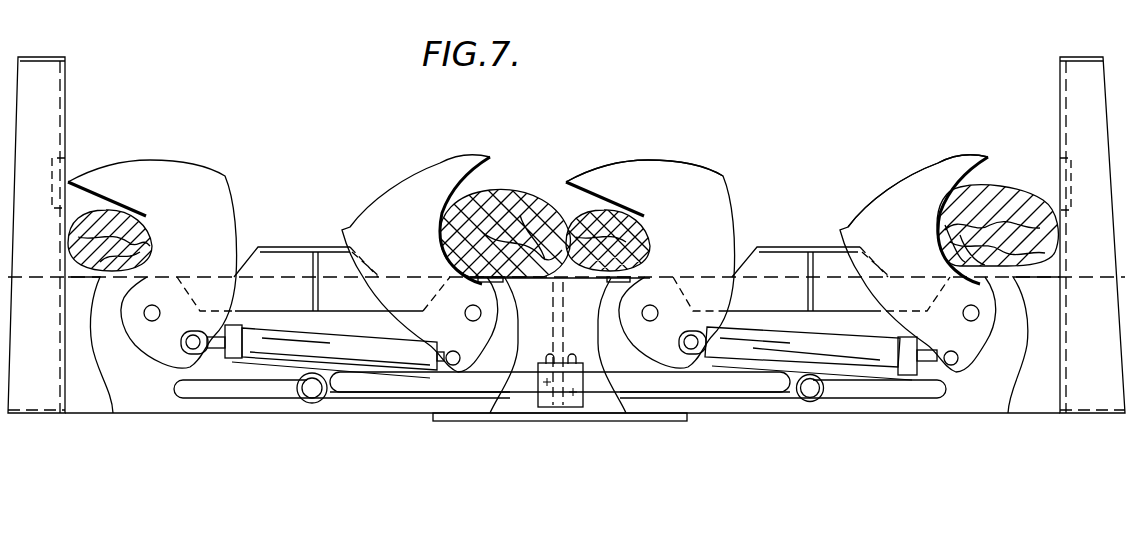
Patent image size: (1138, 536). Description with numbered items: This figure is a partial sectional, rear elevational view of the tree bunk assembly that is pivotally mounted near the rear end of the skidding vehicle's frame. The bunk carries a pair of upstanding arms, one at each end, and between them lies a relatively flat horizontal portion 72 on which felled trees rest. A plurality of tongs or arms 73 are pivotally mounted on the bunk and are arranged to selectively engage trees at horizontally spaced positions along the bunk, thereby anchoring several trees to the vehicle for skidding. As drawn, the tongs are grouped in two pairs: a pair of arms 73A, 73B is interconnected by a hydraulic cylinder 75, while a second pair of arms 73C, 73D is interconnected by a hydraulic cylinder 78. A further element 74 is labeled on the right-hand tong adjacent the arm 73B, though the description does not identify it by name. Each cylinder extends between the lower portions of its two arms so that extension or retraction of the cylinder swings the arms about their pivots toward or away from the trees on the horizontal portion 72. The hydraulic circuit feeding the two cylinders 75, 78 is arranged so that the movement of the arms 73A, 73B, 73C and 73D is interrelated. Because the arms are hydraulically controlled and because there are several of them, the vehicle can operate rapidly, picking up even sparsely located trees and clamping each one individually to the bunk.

The horizontal portion 72 is at (575, 218).
The tongs or arms 73 is at (598, 171).
The arm 73A is at (684, 188).
The arm 73B is at (956, 172).
The arm 73C is at (187, 172).
The arm 73D is at (443, 167).
The jaw hook portion 74 is at (938, 170).
The hydraulic cylinder 75 is at (770, 360).
The hydraulic cylinder 78 is at (330, 374).